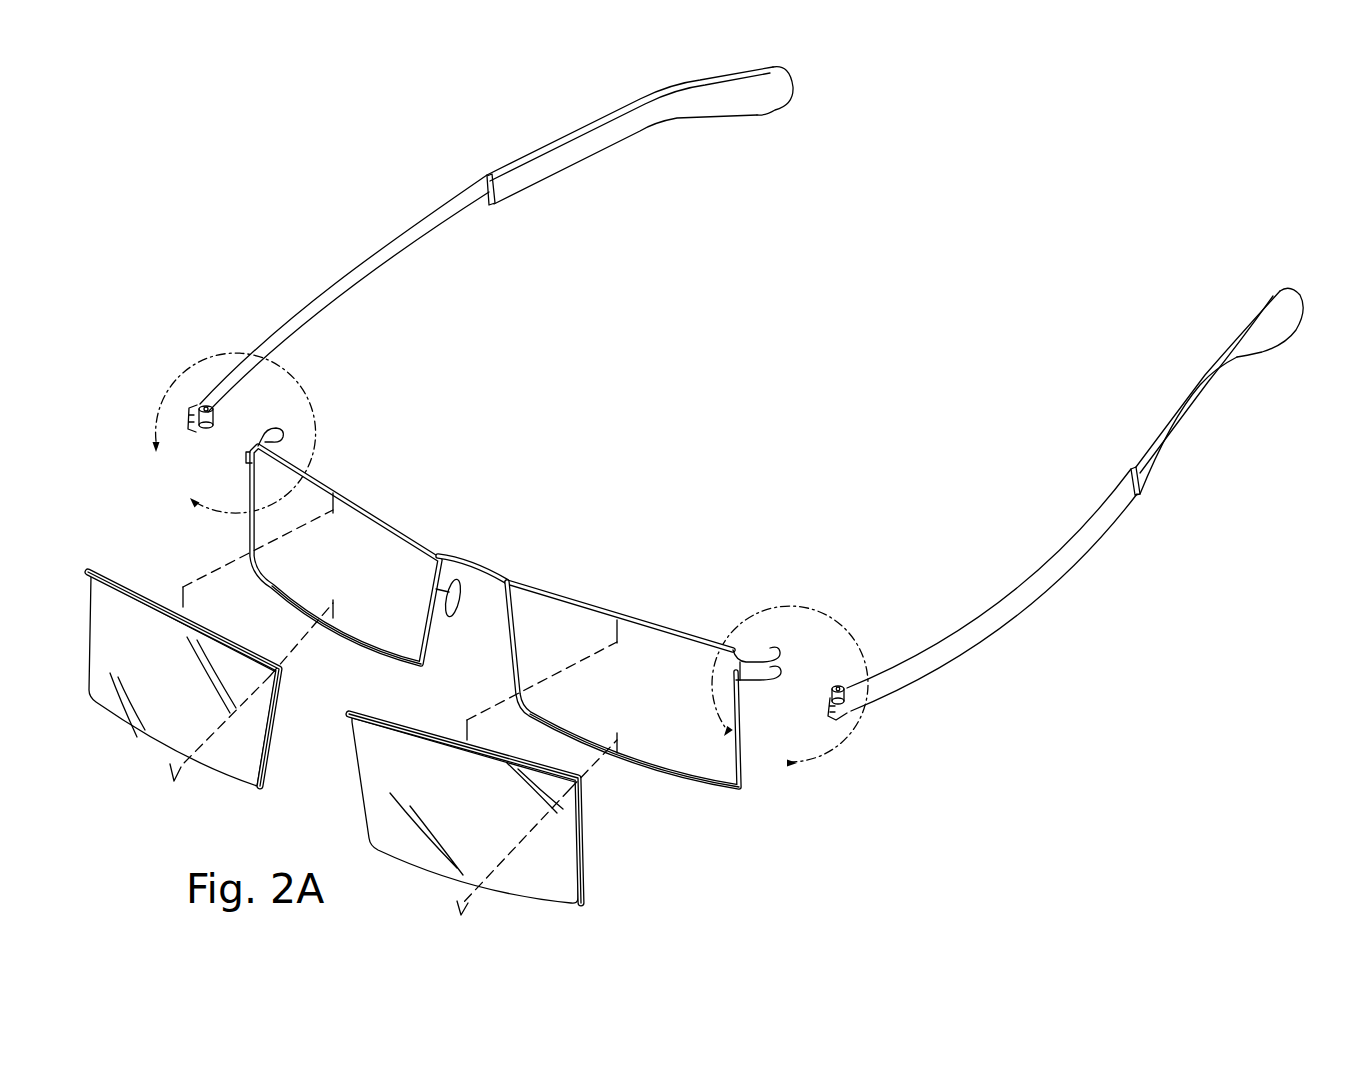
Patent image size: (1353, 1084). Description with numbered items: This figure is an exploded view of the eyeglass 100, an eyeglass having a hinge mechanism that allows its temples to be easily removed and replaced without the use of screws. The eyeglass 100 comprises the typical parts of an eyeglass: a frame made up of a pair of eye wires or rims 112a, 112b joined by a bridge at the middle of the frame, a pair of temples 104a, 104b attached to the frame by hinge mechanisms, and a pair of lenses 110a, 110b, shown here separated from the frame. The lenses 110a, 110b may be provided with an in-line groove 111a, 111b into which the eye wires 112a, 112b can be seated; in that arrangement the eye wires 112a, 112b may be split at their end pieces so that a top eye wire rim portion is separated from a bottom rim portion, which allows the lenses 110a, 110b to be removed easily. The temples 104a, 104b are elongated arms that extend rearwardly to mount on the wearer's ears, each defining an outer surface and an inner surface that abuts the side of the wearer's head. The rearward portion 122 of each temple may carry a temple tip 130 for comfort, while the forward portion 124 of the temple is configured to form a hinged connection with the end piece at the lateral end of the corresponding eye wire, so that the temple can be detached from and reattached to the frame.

The eyeglass 100 is at (409, 167).
The temple 104a is at (388, 260).
The temple 104b is at (989, 597).
The lens 110a is at (153, 727).
The lens 110b is at (551, 893).
The in-line groove 111a is at (286, 675).
The in-line groove 111b is at (595, 888).
The eye wire 112a is at (397, 520).
The eye wire 112b is at (645, 622).
The rearward portion 122 is at (1184, 472).
The forward portion 124 is at (876, 727).
The temple tip 130 is at (773, 97).